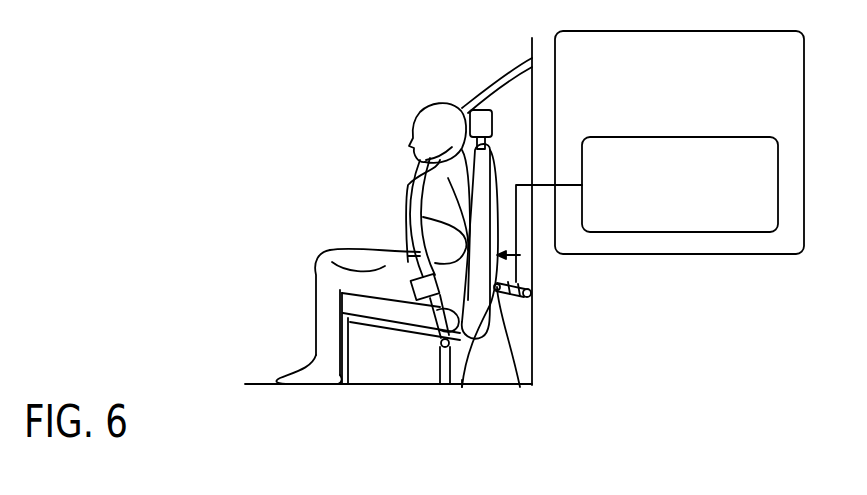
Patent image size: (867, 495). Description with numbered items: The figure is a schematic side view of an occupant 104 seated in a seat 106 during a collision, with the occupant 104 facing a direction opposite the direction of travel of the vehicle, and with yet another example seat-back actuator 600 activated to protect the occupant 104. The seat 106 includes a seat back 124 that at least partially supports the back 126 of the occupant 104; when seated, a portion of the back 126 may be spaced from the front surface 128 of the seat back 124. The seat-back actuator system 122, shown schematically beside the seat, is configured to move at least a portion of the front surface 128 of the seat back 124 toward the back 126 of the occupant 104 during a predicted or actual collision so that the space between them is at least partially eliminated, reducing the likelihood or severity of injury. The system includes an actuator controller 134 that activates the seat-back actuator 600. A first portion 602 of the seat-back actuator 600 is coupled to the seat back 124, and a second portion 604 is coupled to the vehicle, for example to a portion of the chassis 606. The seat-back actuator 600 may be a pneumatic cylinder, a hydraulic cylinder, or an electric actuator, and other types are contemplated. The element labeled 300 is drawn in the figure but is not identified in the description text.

The occupant 104 is at (427, 125).
The seat 106 is at (403, 310).
The seat-back actuator system 122 is at (679, 142).
The seat back 124 is at (480, 213).
The back 126 is at (472, 196).
The front surface 128 is at (432, 244).
The actuator controller 134 is at (637, 209).
The vehicle roof 300 is at (478, 92).
The seat-back actuator 600 is at (525, 384).
The first portion 602 is at (462, 387).
The second portion 604 is at (530, 291).
The chassis 606 is at (532, 345).